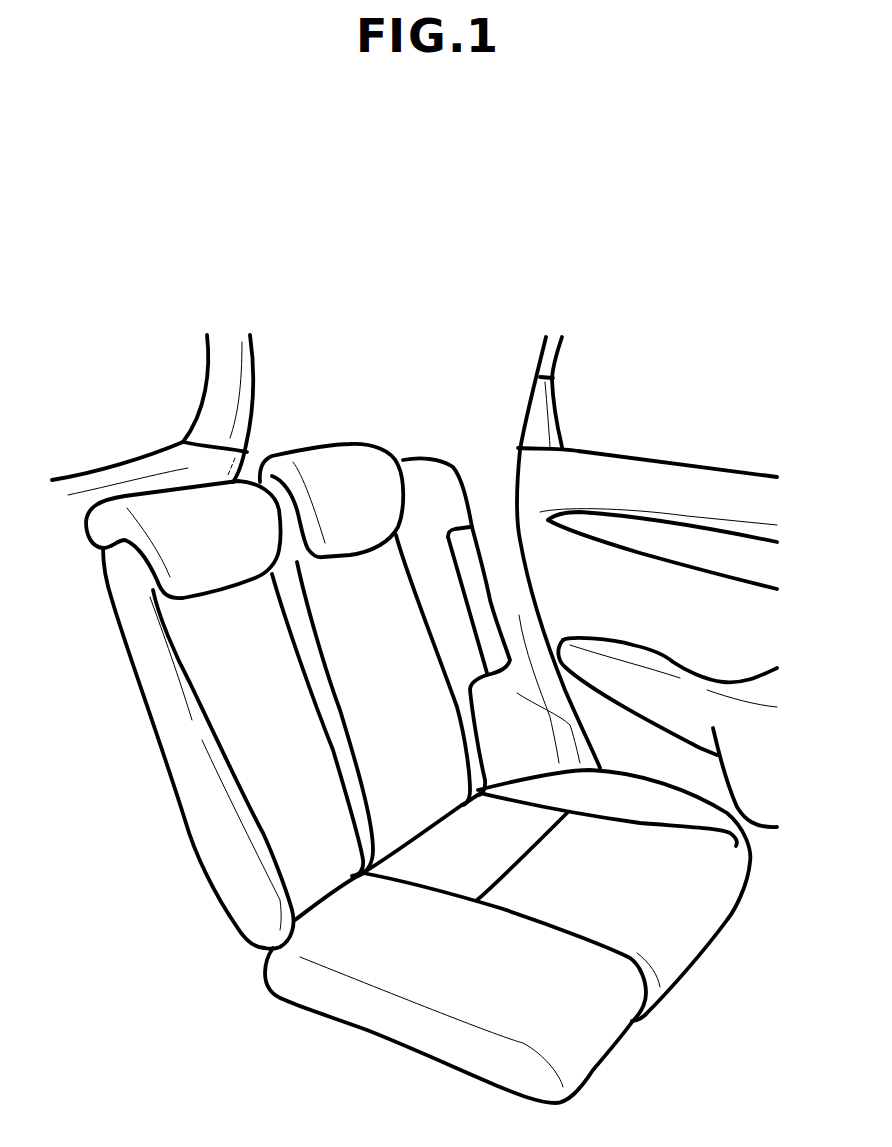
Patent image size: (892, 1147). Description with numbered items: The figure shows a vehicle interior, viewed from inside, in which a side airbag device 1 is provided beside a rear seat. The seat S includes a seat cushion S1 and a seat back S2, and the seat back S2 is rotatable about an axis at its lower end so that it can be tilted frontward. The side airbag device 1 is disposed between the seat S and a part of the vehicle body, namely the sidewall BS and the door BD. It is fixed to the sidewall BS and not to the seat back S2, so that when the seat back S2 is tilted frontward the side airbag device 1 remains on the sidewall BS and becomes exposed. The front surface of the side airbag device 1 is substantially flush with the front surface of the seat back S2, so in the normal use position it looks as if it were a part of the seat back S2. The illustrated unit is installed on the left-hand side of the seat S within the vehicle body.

The seat S is at (354, 389).
The seat cushion S1 is at (697, 913).
The seat back S2 is at (324, 672).
The side airbag device 1 is at (498, 594).
The sidewall BS is at (500, 503).
The door BD is at (705, 485).